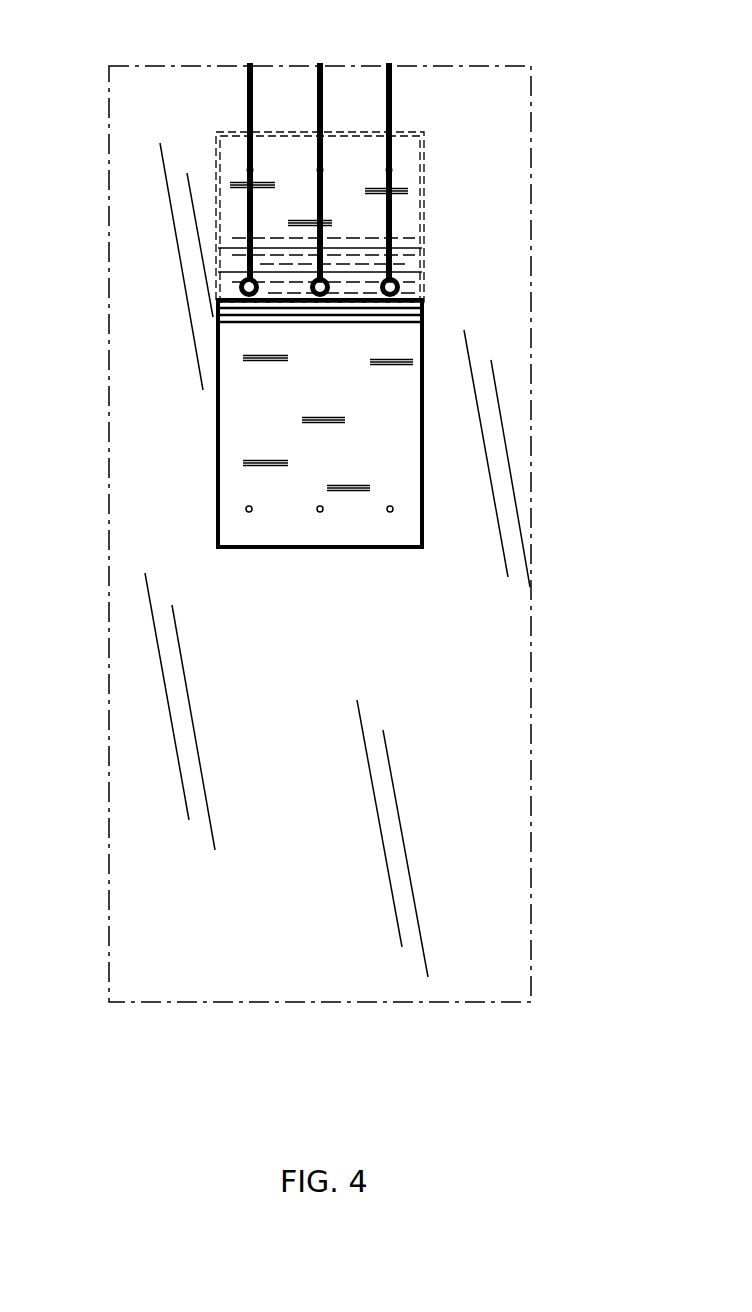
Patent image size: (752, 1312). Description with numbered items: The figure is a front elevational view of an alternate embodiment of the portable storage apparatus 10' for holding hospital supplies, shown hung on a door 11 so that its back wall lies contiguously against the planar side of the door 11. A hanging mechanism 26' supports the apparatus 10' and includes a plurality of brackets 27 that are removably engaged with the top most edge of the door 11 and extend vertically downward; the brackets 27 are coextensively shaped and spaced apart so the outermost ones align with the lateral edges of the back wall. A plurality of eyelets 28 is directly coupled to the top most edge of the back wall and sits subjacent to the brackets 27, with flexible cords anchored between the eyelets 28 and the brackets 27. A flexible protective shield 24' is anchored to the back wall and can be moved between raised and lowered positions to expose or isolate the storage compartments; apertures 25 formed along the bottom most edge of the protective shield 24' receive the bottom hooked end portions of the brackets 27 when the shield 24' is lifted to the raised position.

The portable storage apparatus 10' is at (329, 501).
The door 11 is at (503, 163).
The flexible protective shield 24' is at (372, 278).
The apertures 25 is at (240, 289).
The hanging mechanism 26' is at (249, 150).
The brackets 27 is at (247, 112).
The eyelets 28 is at (390, 512).